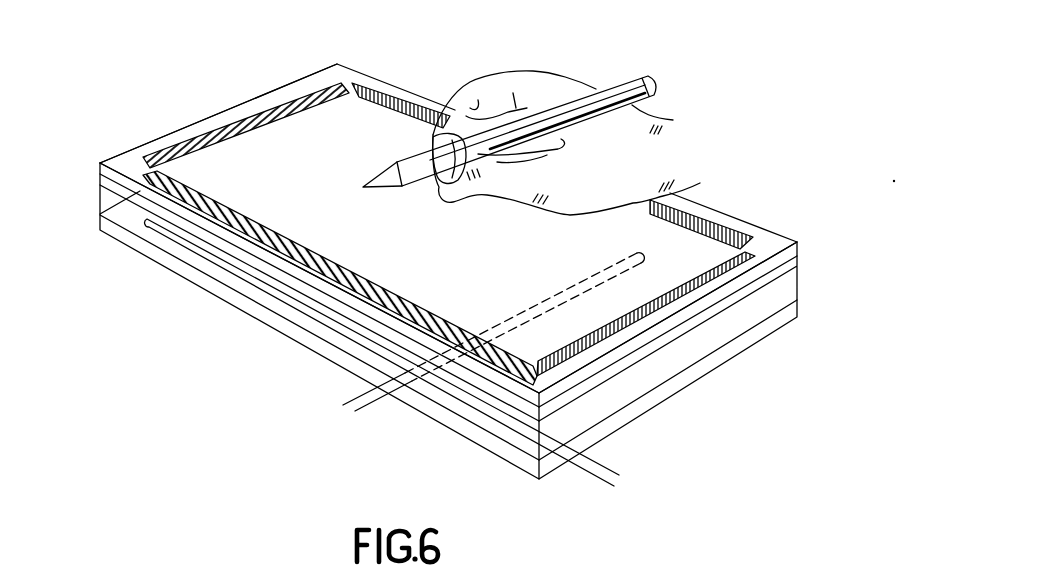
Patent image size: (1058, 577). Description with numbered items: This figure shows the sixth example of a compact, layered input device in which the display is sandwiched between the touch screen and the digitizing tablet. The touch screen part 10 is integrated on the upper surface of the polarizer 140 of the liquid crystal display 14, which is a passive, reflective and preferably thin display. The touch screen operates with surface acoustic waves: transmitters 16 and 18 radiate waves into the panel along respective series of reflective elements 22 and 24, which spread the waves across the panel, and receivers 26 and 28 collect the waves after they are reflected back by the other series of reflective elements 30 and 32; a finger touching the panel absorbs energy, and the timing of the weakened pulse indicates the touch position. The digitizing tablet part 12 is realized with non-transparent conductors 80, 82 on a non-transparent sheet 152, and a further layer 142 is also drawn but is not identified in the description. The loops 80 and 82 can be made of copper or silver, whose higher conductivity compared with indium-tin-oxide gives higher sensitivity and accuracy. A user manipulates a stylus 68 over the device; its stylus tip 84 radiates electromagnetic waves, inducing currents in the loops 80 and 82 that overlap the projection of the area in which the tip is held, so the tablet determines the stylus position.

The touch screen 10 is at (193, 166).
The digitizing tablet 12 is at (176, 252).
The liquid crystal display 14 is at (94, 157).
The transmitter 16 is at (118, 160).
The transmitter 18 is at (352, 91).
The series of reflective elements 22 is at (263, 117).
The series of reflective elements 24 is at (430, 108).
The receiver 26 is at (534, 362).
The receiver 28 is at (150, 171).
The series of reflective elements 30 is at (650, 326).
The series of reflective elements 32 is at (250, 220).
The stylus 68 is at (617, 91).
The conductive loop 80 is at (614, 476).
The conductive loop 82 is at (349, 408).
The stylus tip 84 is at (357, 172).
The polarizer 140 is at (717, 297).
The bottom layer 142 is at (657, 403).
The non-transparent sheet 152 is at (700, 348).